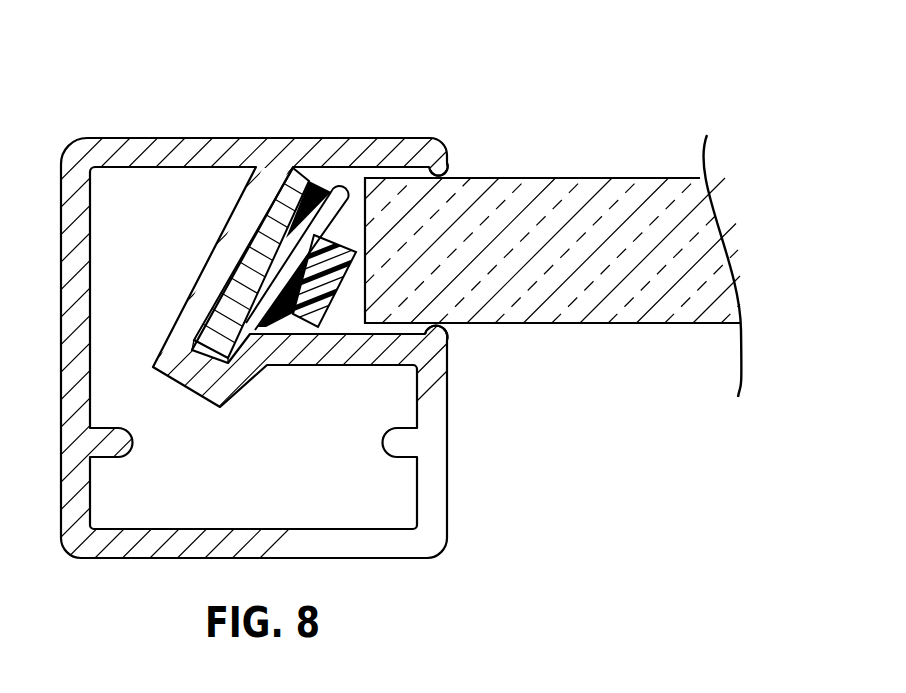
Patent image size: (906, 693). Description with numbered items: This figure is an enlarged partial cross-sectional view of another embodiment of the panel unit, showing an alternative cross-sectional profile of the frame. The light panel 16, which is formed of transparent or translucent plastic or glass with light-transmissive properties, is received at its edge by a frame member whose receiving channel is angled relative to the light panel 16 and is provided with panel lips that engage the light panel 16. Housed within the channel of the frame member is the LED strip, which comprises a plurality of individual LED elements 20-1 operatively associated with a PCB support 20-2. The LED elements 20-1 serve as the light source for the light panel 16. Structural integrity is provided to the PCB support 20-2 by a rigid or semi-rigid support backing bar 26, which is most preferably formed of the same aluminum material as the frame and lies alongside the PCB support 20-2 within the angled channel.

The light panel 16 is at (566, 267).
The support backing bar 26 is at (282, 222).
The LED elements 20-1 is at (327, 300).
The PCB support 20-2 is at (272, 318).